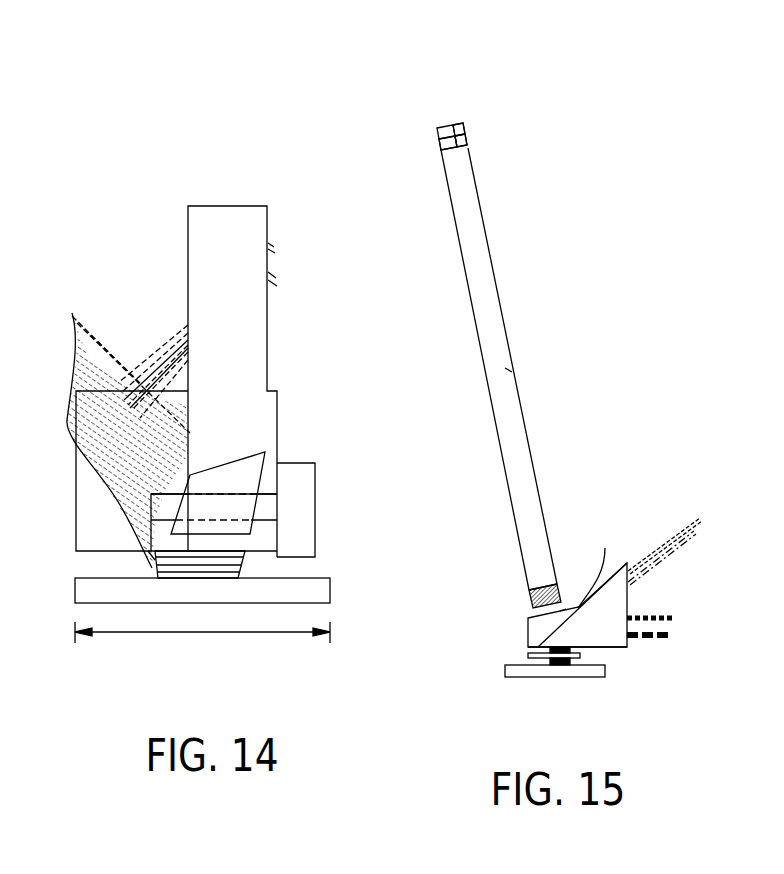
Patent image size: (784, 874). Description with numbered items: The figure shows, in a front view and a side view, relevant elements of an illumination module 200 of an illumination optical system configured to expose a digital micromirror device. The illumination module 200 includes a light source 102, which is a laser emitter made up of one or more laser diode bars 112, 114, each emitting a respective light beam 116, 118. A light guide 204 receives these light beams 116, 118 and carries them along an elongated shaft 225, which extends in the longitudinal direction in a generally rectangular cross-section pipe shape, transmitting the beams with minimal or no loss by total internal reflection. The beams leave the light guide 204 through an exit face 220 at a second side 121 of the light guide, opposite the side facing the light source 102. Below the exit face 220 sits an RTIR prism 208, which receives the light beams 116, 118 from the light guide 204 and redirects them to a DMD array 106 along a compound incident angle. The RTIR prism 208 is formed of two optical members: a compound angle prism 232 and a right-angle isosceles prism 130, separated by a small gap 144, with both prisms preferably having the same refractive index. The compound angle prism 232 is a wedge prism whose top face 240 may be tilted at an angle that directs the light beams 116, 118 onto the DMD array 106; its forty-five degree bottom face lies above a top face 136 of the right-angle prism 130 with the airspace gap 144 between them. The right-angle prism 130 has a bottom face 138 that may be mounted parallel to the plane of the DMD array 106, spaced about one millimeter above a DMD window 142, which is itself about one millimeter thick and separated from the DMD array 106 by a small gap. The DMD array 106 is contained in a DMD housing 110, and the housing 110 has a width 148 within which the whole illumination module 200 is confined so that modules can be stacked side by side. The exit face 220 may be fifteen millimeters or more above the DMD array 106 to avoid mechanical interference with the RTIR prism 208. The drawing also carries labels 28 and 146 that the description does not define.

In FIG. 14, the housing 28 is at (315, 477).
In FIG. 15, the light source 102 is at (408, 118).
In FIG. 14, the DMD array 106 is at (293, 578).
In FIG. 15, the DMD array 106 is at (510, 663).
In FIG. 14, the DMD housing 110 is at (317, 593).
In FIG. 15, the DMD housing 110 is at (550, 677).
In FIG. 15, the laser diode bar 112 is at (450, 128).
In FIG. 15, the laser diode bar 114 is at (463, 125).
In FIG. 14, the light beam 116 is at (253, 463).
In FIG. 15, the light beam 116 is at (443, 147).
In FIG. 15, the light beam 118 is at (467, 145).
In FIG. 15, the second side 121 is at (535, 567).
In FIG. 15, the 45-45-90 degree prism 130 is at (627, 610).
In FIG. 15, the top face 136 is at (615, 572).
In FIG. 15, the bottom face 138 is at (613, 648).
In FIG. 14, the DMD window 142 is at (148, 555).
In FIG. 15, the DMD window 142 is at (528, 655).
In FIG. 15, the gap 144 is at (600, 564).
In FIG. 14, the optical fibers 146 is at (98, 343).
In FIG. 15, the optical fibers 146 is at (675, 540).
In FIG. 14, the width 148 is at (212, 634).
In FIG. 14, the illumination module 200 is at (140, 228).
In FIG. 15, the illumination module 200 is at (585, 238).
In FIG. 14, the light guide 204 is at (222, 213).
In FIG. 15, the light guide 204 is at (498, 322).
In FIG. 15, the RTIR prism 208 is at (614, 490).
In FIG. 14, the exit face 220 is at (248, 448).
In FIG. 15, the exit face 220 is at (528, 595).
In FIG. 15, the elongated shaft 225 is at (505, 368).
In FIG. 14, the compound angle prism 232 is at (263, 534).
In FIG. 15, the compound angle prism 232 is at (528, 625).
In FIG. 15, the top face 240 is at (563, 610).